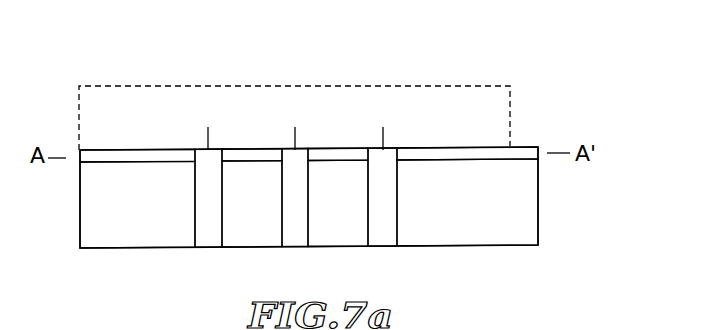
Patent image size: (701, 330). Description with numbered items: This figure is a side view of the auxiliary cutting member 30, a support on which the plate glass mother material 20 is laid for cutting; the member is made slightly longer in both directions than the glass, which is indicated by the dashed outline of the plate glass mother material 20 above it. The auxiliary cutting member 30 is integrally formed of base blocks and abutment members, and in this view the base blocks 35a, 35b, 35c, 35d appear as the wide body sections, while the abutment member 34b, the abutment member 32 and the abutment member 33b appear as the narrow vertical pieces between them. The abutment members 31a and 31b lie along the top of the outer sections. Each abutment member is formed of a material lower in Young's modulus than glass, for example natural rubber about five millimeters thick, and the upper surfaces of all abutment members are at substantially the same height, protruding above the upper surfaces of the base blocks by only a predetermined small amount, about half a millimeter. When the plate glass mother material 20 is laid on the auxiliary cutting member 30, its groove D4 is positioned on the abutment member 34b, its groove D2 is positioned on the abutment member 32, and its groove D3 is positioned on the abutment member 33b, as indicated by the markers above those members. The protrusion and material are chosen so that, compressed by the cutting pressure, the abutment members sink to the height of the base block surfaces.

The auxiliary cutting member 30 is at (182, 55).
The plate glass mother material 20 is at (465, 86).
The abutment member 31a is at (155, 160).
The abutment member 31b is at (453, 147).
The abutment member 32 is at (292, 238).
The abutment member 33b is at (383, 238).
The abutment member 34b is at (205, 238).
The base block 35a is at (113, 238).
The base block 35b is at (243, 233).
The base block 35c is at (338, 238).
The base block 35d is at (472, 235).
The groove D2 is at (296, 137).
The groove D3 is at (384, 137).
The groove D4 is at (209, 137).